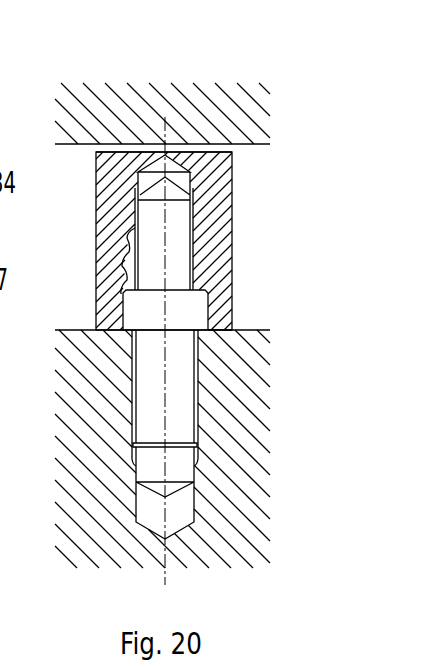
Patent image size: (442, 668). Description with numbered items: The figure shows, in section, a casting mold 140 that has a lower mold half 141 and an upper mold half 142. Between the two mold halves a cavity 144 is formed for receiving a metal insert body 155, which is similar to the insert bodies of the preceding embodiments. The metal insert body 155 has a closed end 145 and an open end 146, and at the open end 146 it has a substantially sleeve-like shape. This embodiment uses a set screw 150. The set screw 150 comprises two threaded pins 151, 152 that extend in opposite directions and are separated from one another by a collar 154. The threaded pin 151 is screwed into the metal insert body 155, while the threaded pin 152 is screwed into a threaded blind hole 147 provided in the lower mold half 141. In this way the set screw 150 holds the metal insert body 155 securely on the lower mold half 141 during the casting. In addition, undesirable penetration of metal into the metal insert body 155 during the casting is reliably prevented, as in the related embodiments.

The casting mold 140 is at (156, 474).
The lower mold half 141 is at (239, 508).
The upper mold half 142 is at (222, 95).
The cavity 144 is at (201, 184).
The closed end 145 is at (153, 152).
The open end 146 is at (221, 330).
The threaded blind hole 147 is at (137, 509).
The set screw 150 is at (154, 351).
The threaded pin 151 is at (154, 234).
The threaded pin 152 is at (151, 407).
The collar 154 is at (155, 313).
The metal insert body 155 is at (113, 186).